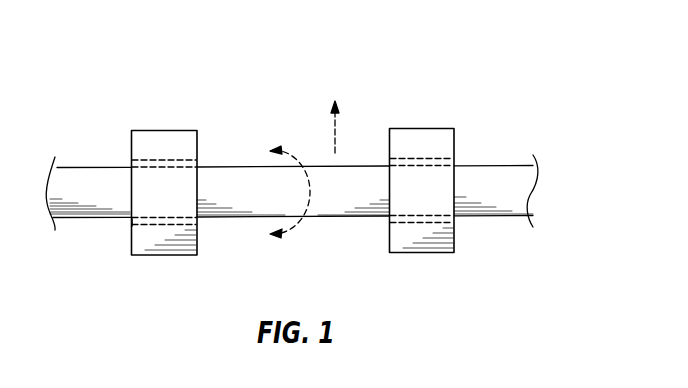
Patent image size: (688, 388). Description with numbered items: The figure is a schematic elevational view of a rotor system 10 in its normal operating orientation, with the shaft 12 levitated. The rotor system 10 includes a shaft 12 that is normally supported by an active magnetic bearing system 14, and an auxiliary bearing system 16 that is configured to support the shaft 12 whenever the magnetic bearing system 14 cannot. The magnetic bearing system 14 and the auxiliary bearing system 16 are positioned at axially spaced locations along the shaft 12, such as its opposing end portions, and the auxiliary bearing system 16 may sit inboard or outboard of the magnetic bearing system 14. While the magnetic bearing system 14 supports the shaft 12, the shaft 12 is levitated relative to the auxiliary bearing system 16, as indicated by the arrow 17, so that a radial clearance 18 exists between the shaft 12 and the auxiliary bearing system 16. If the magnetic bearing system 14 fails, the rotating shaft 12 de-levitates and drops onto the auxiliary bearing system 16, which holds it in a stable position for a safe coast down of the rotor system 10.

The rotor system 10 is at (541, 55).
The shaft 12 is at (94, 167).
The magnetic bearing system 14 is at (420, 128).
The auxiliary bearing system 16 is at (166, 130).
The arrow 17 is at (335, 129).
The radial clearance 18 is at (132, 222).